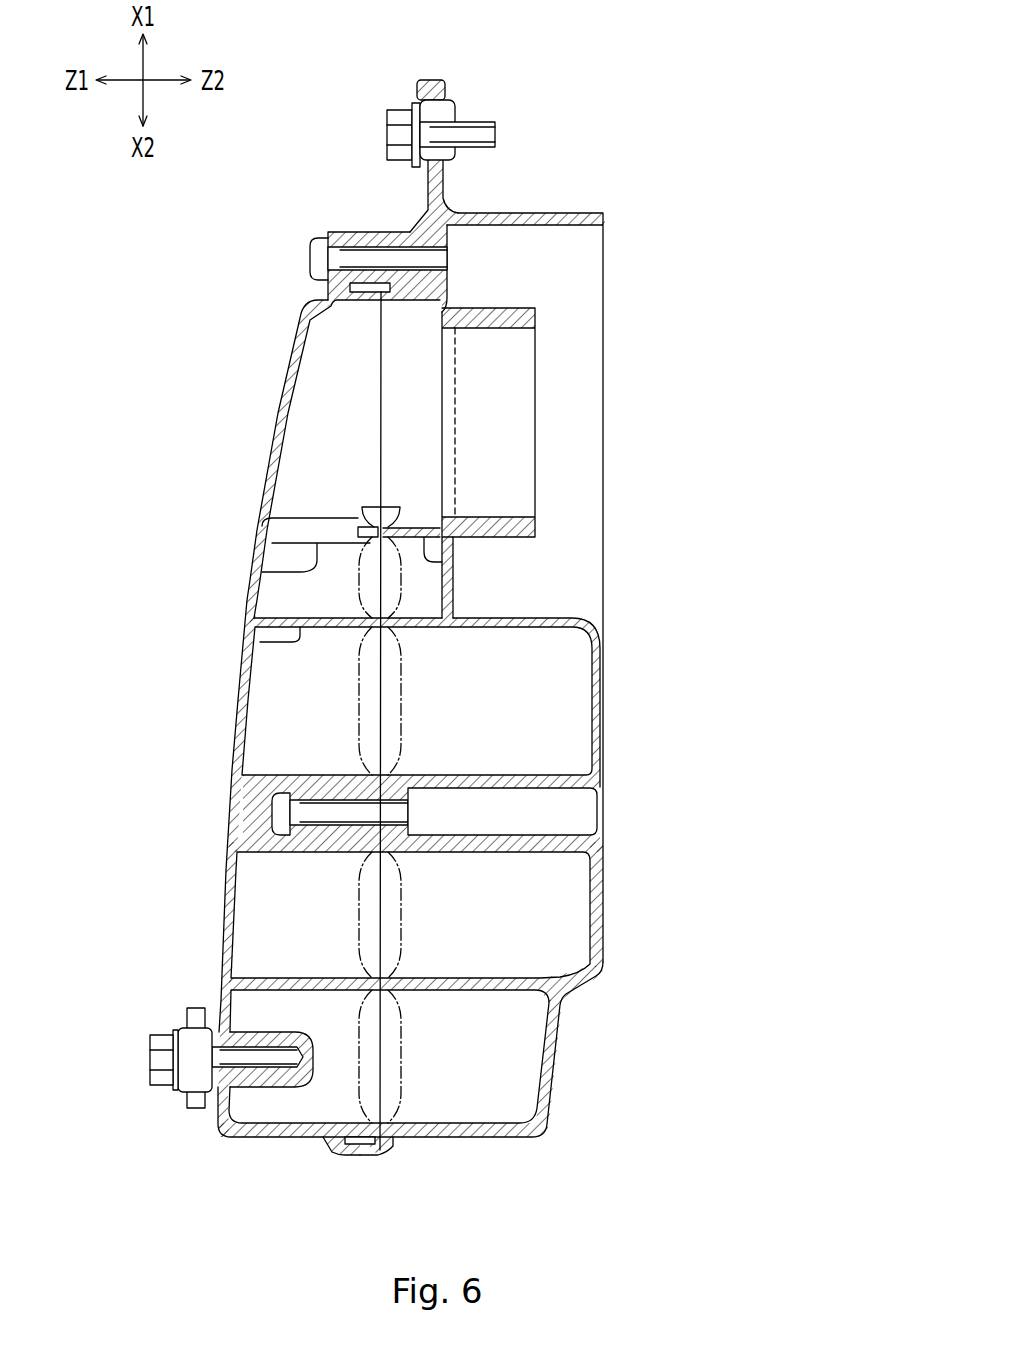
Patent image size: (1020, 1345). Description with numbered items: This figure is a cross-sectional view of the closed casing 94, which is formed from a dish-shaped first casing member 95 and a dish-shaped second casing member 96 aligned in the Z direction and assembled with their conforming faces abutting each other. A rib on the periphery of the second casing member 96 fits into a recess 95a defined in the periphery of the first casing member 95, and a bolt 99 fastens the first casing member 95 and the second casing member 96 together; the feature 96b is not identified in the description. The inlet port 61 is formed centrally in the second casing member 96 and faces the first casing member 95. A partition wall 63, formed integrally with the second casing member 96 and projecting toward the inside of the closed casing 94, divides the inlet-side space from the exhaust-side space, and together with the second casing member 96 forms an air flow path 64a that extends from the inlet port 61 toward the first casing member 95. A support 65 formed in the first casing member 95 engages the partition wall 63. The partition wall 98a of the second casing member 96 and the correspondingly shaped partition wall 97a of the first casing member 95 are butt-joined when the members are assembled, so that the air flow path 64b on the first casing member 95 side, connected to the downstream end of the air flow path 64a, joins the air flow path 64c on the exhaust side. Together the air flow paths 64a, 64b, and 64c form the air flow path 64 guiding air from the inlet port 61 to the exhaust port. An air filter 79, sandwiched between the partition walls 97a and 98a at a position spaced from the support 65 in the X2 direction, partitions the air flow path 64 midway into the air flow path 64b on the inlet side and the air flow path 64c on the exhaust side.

The closed casing 94 is at (641, 179).
The first casing member 95 is at (282, 387).
The recess 95a is at (352, 1150).
The second casing member 96 is at (610, 424).
The engaging recess of second housing 96b is at (389, 1156).
The bolt 99 is at (313, 256).
The inlet port 61 is at (450, 375).
The partition wall 63 is at (455, 565).
The air flow path 64 is at (797, 560).
The air flow path 64a is at (425, 460).
The air flow path 64b is at (345, 700).
The air flow path 64c is at (568, 708).
The support 65 is at (272, 570).
The partition wall 97a is at (272, 637).
The partition wall 98a is at (472, 611).
The air filter 79 is at (357, 683).